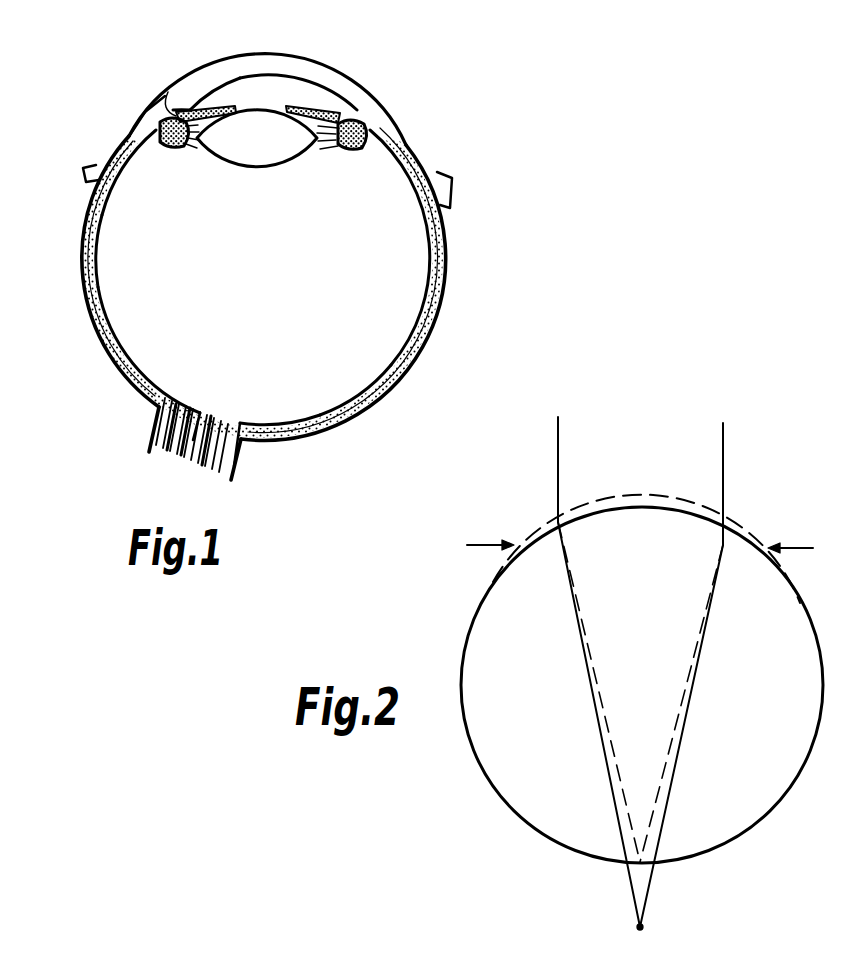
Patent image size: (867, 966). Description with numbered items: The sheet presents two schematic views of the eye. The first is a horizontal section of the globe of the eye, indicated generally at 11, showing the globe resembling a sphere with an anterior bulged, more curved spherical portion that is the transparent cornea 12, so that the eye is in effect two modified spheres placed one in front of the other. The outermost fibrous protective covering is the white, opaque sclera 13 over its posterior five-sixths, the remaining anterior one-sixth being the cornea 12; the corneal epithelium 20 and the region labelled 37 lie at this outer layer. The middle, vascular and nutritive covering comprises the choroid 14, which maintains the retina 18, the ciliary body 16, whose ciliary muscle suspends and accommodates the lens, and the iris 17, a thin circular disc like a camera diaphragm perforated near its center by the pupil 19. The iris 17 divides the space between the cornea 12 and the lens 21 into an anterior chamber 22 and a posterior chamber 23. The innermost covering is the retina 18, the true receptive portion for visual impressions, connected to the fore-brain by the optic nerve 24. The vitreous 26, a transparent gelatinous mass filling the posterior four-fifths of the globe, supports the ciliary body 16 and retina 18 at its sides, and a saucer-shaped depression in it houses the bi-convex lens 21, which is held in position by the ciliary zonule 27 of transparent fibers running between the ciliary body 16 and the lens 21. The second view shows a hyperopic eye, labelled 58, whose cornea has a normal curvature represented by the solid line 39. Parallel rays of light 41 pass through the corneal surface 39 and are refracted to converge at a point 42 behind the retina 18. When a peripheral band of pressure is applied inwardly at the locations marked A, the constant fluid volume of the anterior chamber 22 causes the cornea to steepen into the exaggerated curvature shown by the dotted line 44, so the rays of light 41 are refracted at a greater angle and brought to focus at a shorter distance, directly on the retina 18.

In FIG. 1, the eye 11 is at (454, 288).
In FIG. 1, the cornea 12 is at (322, 70).
In FIG. 1, the sclera 13 is at (432, 338).
In FIG. 1, the choroid 14 is at (348, 418).
In FIG. 1, the ciliary body 16 is at (370, 124).
In FIG. 1, the iris 17 is at (196, 112).
In FIG. 1, the retina 18 is at (391, 361).
In FIG. 2, the retina 18 is at (760, 810).
In FIG. 1, the pupil 19 is at (193, 111).
In FIG. 1, the corneal epithelium 20 is at (267, 55).
In FIG. 1, the lens 21 is at (266, 158).
In FIG. 1, the anterior chamber 22 is at (293, 87).
In FIG. 1, the posterior chamber 23 is at (324, 146).
In FIG. 1, the optic nerve 24 is at (163, 430).
In FIG. 1, the vitreous 26 is at (118, 291).
In FIG. 1, the ciliary zonule 27 is at (189, 147).
In FIG. 1, the limbus 37 is at (160, 97).
In FIG. 2, the solid line (normal corneal curvature) 39 is at (638, 507).
In FIG. 2, the parallel rays of light 41 is at (725, 455).
In FIG. 2, the point 42 is at (645, 927).
In FIG. 2, the dotted line (steepened curvature) 44 is at (680, 502).
In FIG. 2, the eye 58 is at (474, 965).
In FIG. 2, the ablation zone boundary A is at (533, 545).